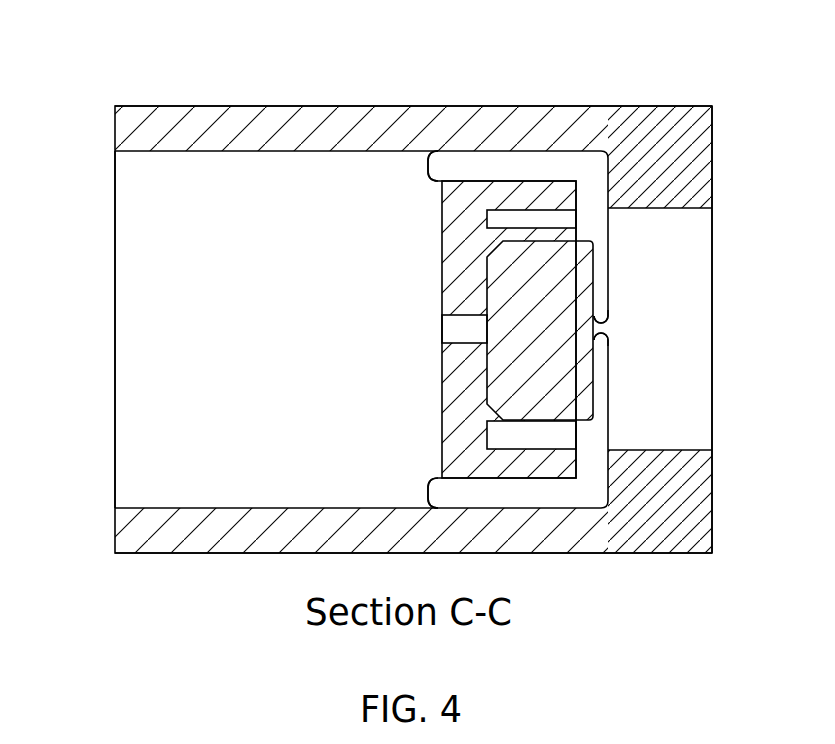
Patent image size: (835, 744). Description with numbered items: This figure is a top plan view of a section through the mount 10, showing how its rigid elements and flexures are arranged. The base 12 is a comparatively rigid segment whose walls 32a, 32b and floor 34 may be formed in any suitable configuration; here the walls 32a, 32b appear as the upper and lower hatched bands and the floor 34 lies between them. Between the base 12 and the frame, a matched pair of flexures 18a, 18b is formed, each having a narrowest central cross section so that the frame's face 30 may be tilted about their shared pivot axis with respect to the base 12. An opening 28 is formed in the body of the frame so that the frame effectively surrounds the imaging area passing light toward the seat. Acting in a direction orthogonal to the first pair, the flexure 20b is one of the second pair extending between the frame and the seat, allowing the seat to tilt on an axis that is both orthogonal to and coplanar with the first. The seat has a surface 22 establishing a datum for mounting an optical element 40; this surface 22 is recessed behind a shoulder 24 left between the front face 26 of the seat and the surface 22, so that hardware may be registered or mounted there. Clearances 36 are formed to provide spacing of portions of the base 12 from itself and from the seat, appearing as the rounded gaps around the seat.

The mount 10 is at (130, 52).
The base 12 is at (108, 337).
The flexure 18a is at (587, 553).
The flexure 18b is at (563, 106).
The flexure 20b is at (598, 330).
The surface 22 is at (548, 228).
The shoulder 24 is at (556, 213).
The front face 26 is at (578, 190).
The opening 28 is at (684, 320).
The face 30 is at (712, 483).
The wall 32a is at (190, 553).
The wall 32b is at (470, 106).
The floor 34 is at (302, 346).
The clearance 36 is at (433, 167).
The optical element 40 is at (587, 296).